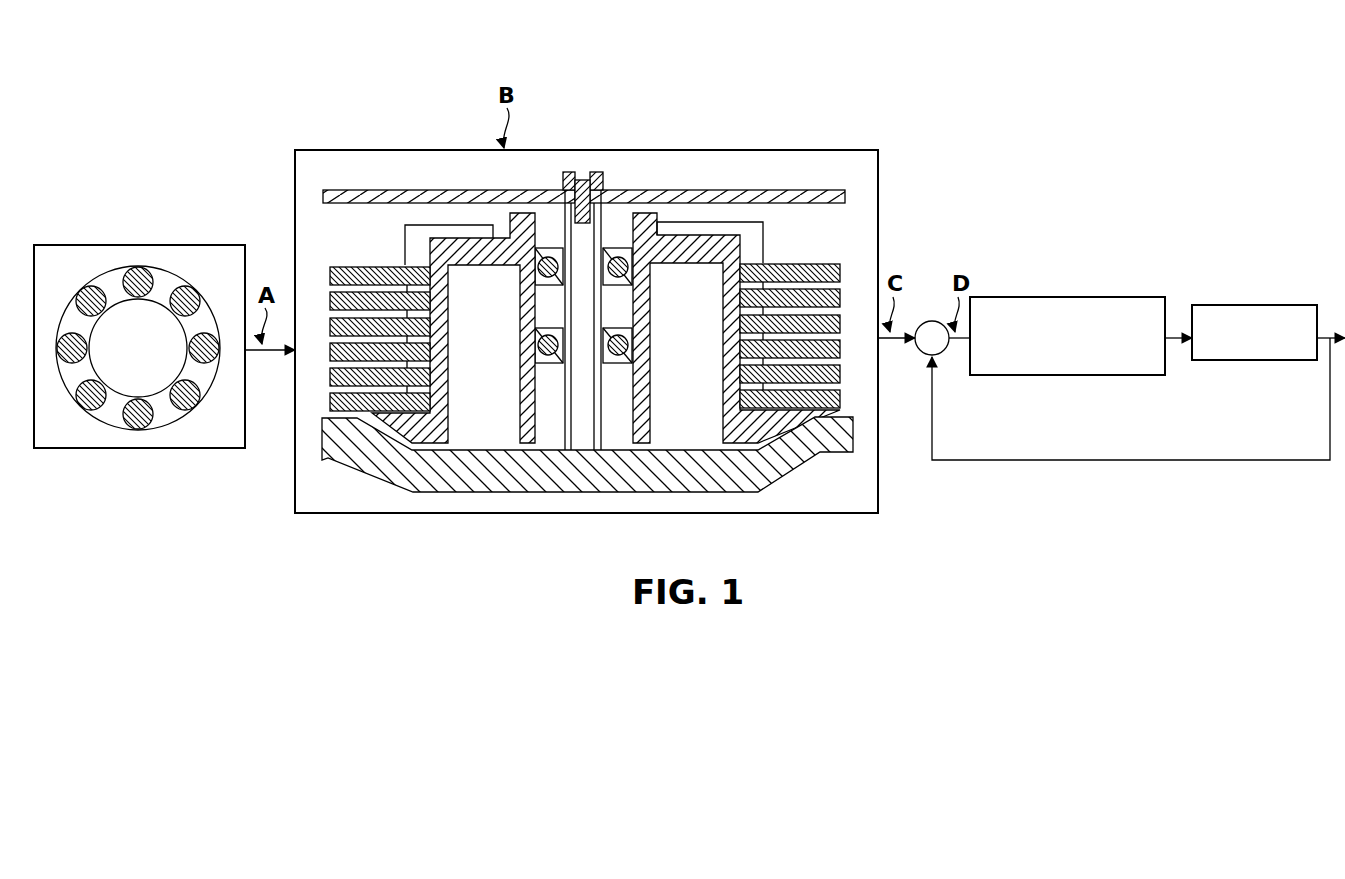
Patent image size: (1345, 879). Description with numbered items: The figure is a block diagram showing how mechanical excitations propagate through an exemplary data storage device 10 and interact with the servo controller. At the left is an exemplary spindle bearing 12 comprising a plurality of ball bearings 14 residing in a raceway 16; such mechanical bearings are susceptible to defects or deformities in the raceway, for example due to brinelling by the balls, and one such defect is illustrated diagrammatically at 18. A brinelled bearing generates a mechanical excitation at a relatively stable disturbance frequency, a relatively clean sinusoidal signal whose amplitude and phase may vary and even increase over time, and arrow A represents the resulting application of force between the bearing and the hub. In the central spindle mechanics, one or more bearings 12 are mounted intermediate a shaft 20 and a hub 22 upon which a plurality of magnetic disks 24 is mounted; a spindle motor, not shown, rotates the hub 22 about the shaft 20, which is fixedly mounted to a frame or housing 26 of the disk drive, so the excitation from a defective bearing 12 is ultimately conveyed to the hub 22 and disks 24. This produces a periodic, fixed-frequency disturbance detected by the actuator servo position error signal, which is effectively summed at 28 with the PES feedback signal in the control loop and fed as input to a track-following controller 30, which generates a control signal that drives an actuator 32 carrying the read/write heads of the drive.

The data storage device 10 is at (180, 60).
The spindle bearing 12 is at (76, 246).
The ball bearings 14 is at (88, 290).
The raceway 16 is at (74, 323).
The defect 18 is at (186, 370).
The shaft 20 is at (713, 144).
The hub 22 is at (448, 443).
The magnetic disks 24 is at (430, 413).
The frame or housing 26 is at (768, 474).
The summing point 28 is at (926, 322).
The track-following controller 30 is at (1097, 297).
The actuator 32 is at (1215, 305).